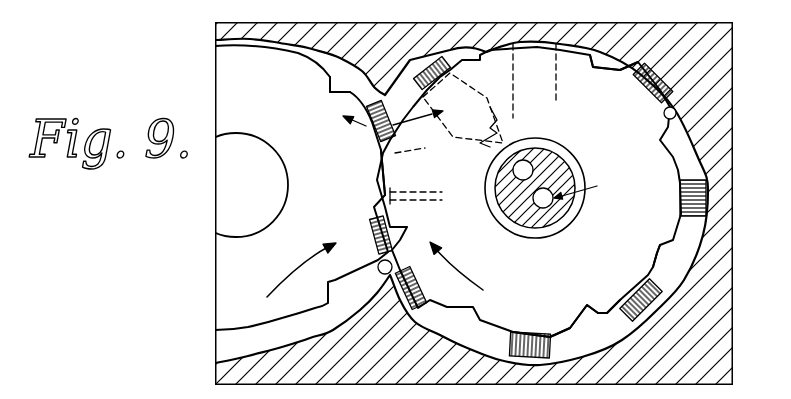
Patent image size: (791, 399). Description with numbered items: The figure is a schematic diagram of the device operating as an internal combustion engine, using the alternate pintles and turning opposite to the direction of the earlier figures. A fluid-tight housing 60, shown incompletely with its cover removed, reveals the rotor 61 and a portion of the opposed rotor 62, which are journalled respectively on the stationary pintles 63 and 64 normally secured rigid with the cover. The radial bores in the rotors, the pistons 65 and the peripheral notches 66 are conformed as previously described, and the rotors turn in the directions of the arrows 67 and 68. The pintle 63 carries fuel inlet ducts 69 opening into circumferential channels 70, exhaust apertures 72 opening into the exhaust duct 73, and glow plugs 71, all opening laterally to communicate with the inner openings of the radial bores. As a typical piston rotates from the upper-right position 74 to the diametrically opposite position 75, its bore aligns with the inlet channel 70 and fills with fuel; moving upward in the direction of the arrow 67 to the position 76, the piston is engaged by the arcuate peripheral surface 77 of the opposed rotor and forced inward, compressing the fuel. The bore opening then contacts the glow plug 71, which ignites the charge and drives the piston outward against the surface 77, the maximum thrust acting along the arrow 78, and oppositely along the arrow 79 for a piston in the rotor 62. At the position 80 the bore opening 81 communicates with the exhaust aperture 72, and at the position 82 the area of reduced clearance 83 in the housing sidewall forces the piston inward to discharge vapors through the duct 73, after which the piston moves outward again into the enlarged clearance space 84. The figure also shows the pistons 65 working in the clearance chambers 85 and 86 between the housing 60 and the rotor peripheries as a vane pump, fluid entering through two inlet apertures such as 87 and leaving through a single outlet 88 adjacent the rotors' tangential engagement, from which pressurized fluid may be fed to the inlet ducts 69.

The fluid-tight housing 60 is at (338, 352).
The rotor 61 is at (500, 262).
The opposed rotor 62 is at (232, 245).
The stationary pintle 63 is at (563, 160).
The stationary pintle 64 is at (262, 157).
The piston 65 is at (680, 200).
The peripheral notch 66 is at (323, 78).
The arrow 67 is at (469, 274).
The arrow 68 is at (289, 274).
The fuel inlet duct 69 is at (587, 185).
The circumferential channel 70 is at (576, 222).
The glow plug 71 is at (490, 182).
The exhaust aperture 72 is at (525, 160).
The exhaust duct 73 is at (536, 165).
The piston position 74 is at (668, 82).
The piston position 75 is at (405, 295).
The piston position 76 is at (423, 163).
The arcuate peripheral surface 77 is at (385, 170).
The arrow 78 is at (410, 152).
The arrow 79 is at (382, 133).
The piston position 80 is at (421, 62).
The opening 81 is at (497, 148).
The piston position 82 is at (525, 65).
The area of reduced clearance 83 is at (562, 42).
The enlarged clearance space 84 is at (652, 53).
The clearance chamber 85 is at (600, 324).
The clearance chamber 86 is at (318, 324).
The inlet aperture 87 is at (678, 111).
The outlet 88 is at (379, 272).